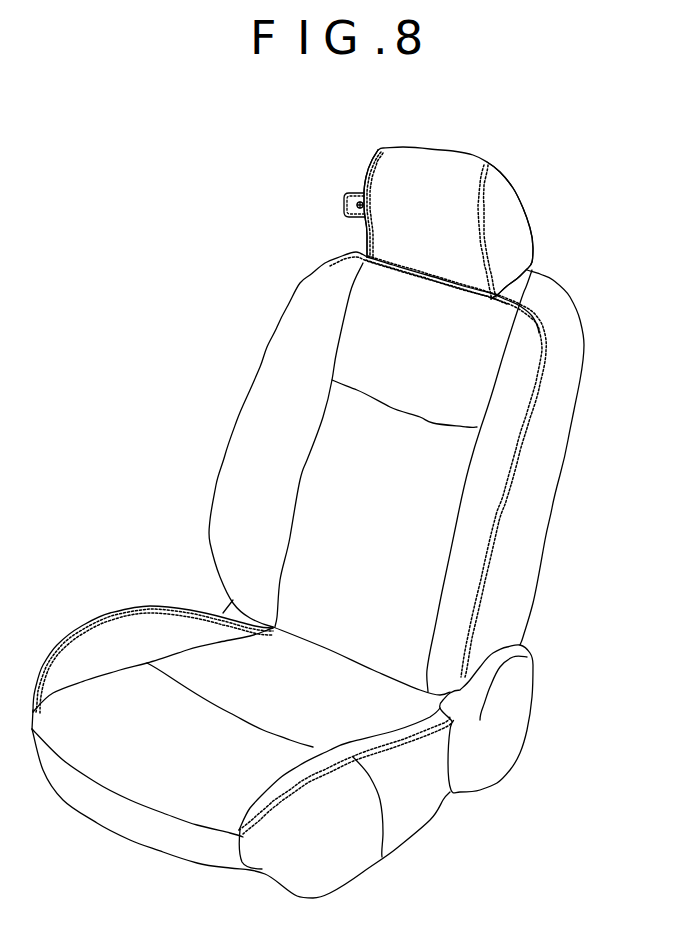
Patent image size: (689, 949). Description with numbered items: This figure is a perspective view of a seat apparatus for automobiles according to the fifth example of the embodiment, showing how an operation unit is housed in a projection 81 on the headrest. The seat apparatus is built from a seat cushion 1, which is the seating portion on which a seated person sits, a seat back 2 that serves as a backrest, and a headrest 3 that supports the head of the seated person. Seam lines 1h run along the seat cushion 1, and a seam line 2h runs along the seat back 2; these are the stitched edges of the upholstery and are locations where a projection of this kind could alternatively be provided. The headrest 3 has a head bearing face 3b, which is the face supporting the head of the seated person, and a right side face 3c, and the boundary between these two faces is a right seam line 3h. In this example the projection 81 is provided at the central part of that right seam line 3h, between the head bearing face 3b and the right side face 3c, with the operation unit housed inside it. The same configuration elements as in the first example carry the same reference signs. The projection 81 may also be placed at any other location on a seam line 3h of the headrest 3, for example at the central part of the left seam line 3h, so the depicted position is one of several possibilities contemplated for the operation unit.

The seat cushion 1 is at (282, 720).
The seam line 1h is at (117, 612).
The seat back 2 is at (420, 445).
The seam line 2h is at (333, 257).
The headrest 3 is at (438, 204).
The head bearing face 3b is at (457, 242).
The right side face 3c is at (517, 228).
The seam line 3h is at (376, 170).
The projection 81 is at (343, 204).